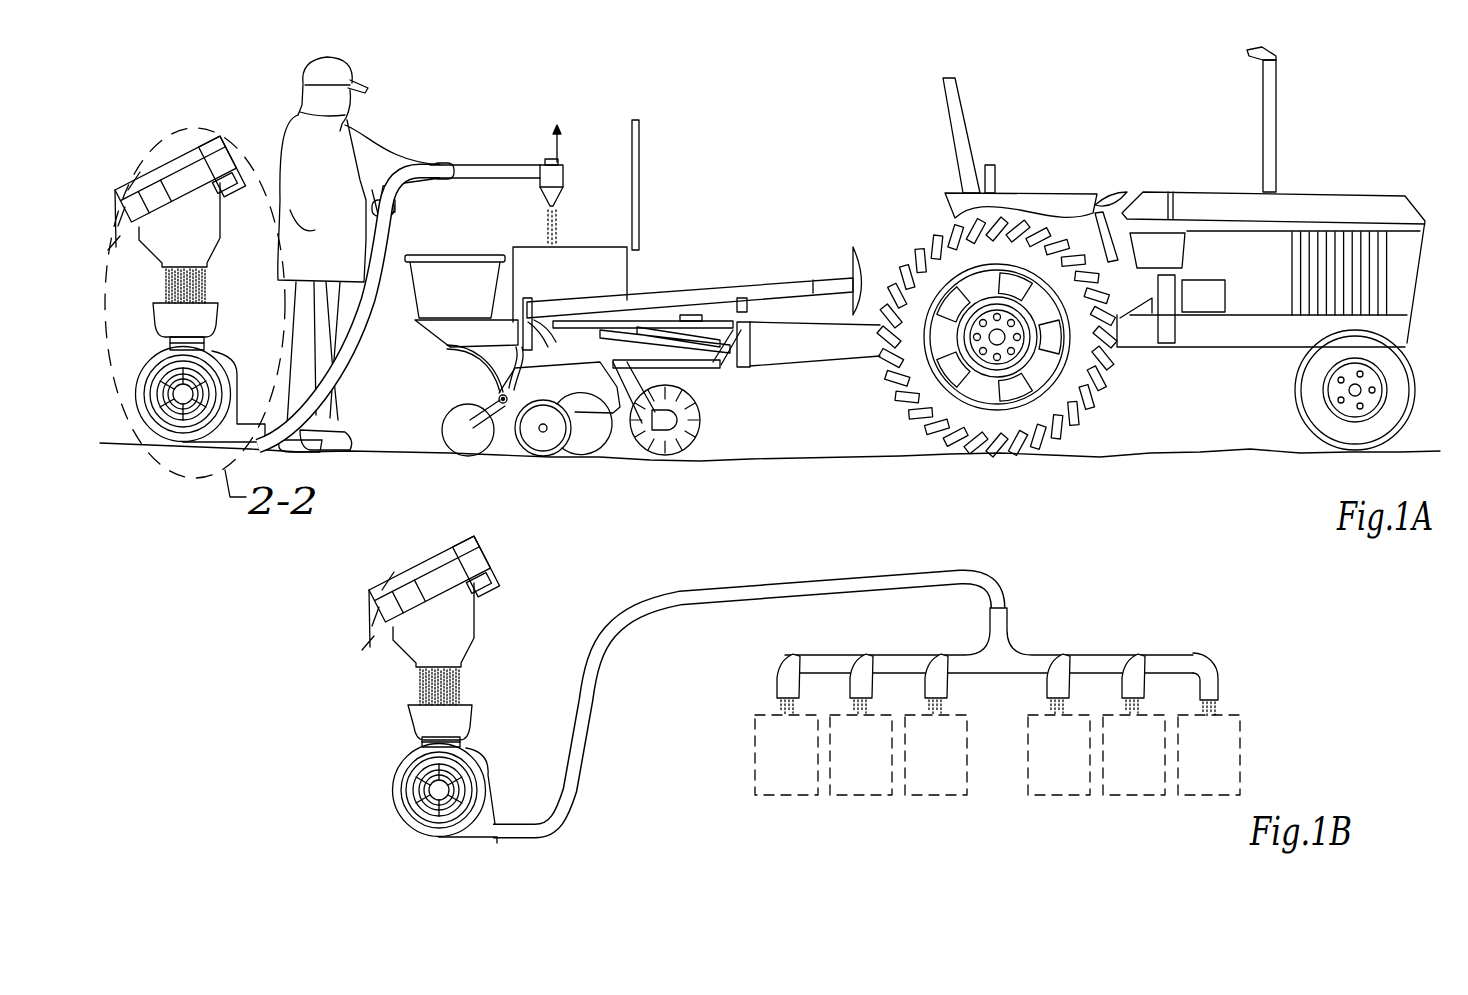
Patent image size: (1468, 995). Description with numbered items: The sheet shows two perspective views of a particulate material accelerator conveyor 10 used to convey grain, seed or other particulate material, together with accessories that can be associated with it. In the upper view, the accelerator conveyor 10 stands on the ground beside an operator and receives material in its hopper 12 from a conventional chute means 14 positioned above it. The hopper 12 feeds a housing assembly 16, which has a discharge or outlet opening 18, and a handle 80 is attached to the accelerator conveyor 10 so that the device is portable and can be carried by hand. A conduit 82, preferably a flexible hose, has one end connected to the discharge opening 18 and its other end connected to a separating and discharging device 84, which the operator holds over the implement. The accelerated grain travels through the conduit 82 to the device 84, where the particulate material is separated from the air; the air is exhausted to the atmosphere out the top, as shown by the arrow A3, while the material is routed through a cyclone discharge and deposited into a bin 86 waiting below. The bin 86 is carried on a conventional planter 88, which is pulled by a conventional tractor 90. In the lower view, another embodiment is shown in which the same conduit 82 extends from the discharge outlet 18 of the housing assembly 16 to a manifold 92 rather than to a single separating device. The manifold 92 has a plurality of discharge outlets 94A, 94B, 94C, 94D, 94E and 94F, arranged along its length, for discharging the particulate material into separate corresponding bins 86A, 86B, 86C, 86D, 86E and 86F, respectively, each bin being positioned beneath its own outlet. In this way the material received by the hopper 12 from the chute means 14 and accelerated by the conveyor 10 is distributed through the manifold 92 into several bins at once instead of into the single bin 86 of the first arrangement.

In FIG. 1A, the accelerator conveyor 10 is at (237, 357).
In FIG. 1B, the accelerator conveyor 10 is at (429, 794).
In FIG. 1B, the hopper 12 is at (410, 716).
In FIG. 1A, the chute means 14 is at (187, 216).
In FIG. 1B, the chute means 14 is at (470, 627).
In FIG. 1B, the housing assembly 16 is at (475, 762).
In FIG. 1B, the discharge opening 18 is at (488, 842).
In FIG. 1A, the handle 80 is at (193, 337).
In FIG. 1B, the handle 80 is at (447, 740).
In FIG. 1A, the conduit 82 is at (487, 167).
In FIG. 1B, the conduit 82 is at (797, 580).
In FIG. 1A, the separating and discharging device 84 is at (565, 174).
In FIG. 1A, the bin 86 is at (622, 262).
In FIG. 1B, the bin 86A is at (782, 797).
In FIG. 1B, the bin 86B is at (857, 797).
In FIG. 1B, the bin 86C is at (938, 795).
In FIG. 1B, the bin 86D is at (1063, 795).
In FIG. 1B, the bin 86E is at (1137, 795).
In FIG. 1B, the bin 86F is at (1212, 796).
In FIG. 1A, the planter 88 is at (440, 355).
In FIG. 1A, the tractor 90 is at (1210, 195).
In FIG. 1B, the manifold 92 is at (1005, 617).
In FIG. 1B, the discharge outlet 94A is at (785, 682).
In FIG. 1B, the discharge outlet 94B is at (851, 694).
In FIG. 1B, the discharge outlet 94C is at (946, 690).
In FIG. 1B, the discharge outlet 94D is at (1053, 688).
In FIG. 1B, the discharge outlet 94E is at (1145, 688).
In FIG. 1B, the discharge outlet 94F is at (1218, 683).
In FIG. 1A, the arrow A3 is at (560, 142).